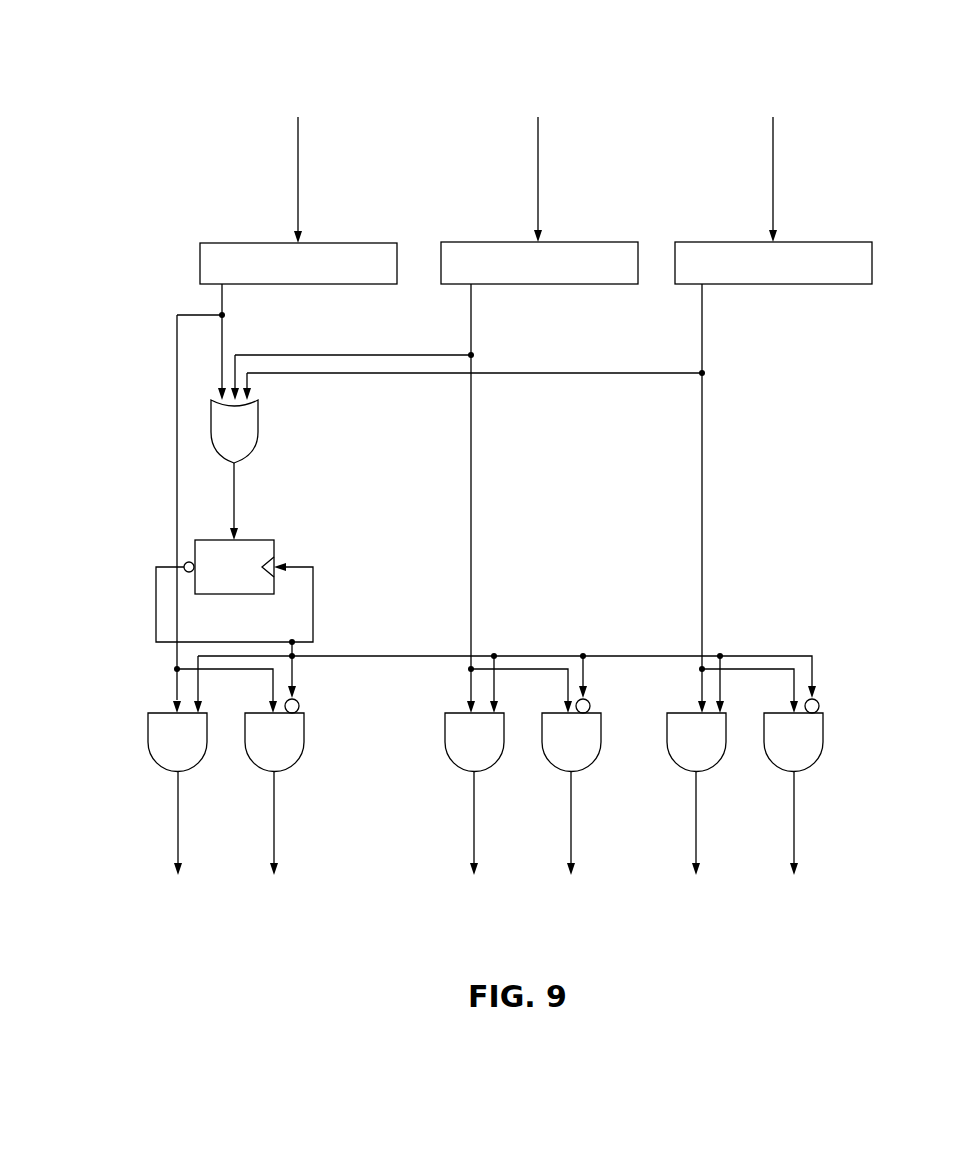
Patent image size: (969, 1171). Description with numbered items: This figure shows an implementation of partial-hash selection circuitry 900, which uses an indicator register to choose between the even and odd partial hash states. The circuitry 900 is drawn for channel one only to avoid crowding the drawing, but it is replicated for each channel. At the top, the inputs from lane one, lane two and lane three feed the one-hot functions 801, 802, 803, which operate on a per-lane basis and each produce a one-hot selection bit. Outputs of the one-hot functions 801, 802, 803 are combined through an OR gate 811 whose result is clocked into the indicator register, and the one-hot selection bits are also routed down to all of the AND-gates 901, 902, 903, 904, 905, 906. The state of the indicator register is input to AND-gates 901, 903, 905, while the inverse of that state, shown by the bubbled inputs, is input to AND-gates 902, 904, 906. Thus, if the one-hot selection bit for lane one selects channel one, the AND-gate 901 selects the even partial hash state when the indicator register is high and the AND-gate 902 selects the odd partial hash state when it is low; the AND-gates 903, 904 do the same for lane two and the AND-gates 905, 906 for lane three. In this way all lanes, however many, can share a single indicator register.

The partial-hash selection circuitry 900 is at (146, 36).
The one-hot function 801 is at (272, 243).
The one-hot function 802 is at (513, 242).
The one-hot function 803 is at (746, 242).
The OR gate 811 is at (258, 418).
The AND-gate 901 is at (160, 762).
The AND-gate 902 is at (293, 762).
The AND-gate 903 is at (456, 762).
The AND-gate 904 is at (552, 762).
The AND-gate 905 is at (678, 762).
The AND-gate 906 is at (815, 762).